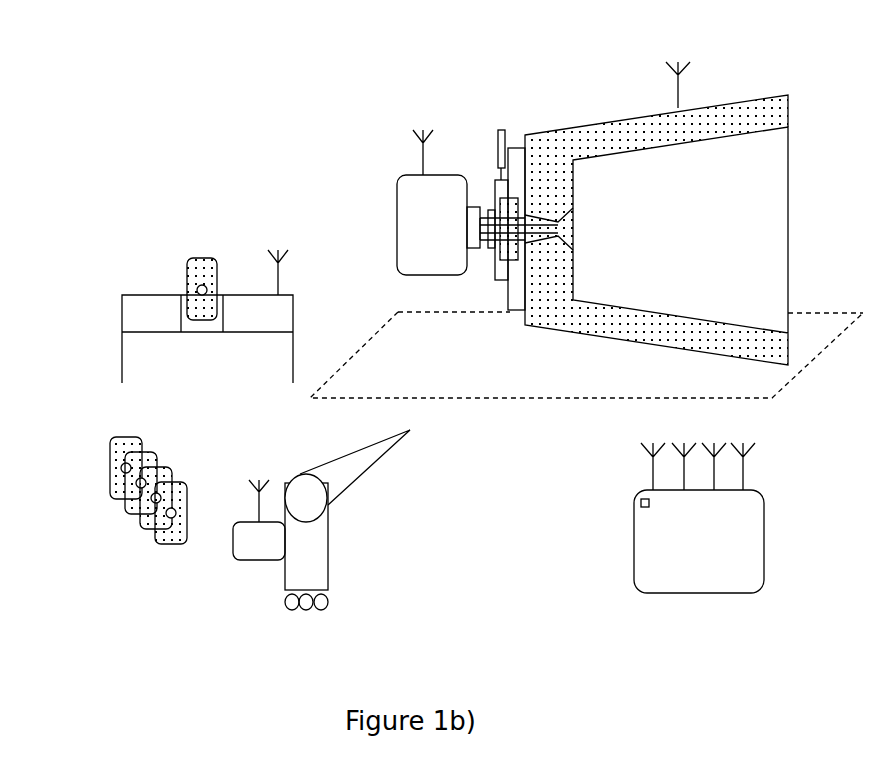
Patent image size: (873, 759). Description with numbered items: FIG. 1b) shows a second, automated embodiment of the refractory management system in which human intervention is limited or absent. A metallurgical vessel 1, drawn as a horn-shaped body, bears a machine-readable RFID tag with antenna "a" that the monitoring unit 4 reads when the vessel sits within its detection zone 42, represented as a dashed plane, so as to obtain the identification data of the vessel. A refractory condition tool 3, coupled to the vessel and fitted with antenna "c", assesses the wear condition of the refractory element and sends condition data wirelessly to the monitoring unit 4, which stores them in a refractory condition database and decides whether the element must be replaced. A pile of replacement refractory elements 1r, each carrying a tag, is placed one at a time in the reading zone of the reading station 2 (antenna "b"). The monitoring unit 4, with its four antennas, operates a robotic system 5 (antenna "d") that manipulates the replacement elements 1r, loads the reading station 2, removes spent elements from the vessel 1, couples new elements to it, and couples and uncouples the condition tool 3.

The metallurgical vessel 1 is at (562, 123).
The replacement refractory elements 1r is at (103, 437).
The reading station 2 is at (181, 290).
The refractory condition tool 3 is at (395, 188).
The monitoring unit 4 is at (634, 528).
The detection zone 42 is at (548, 372).
The robotic system 5 is at (350, 535).